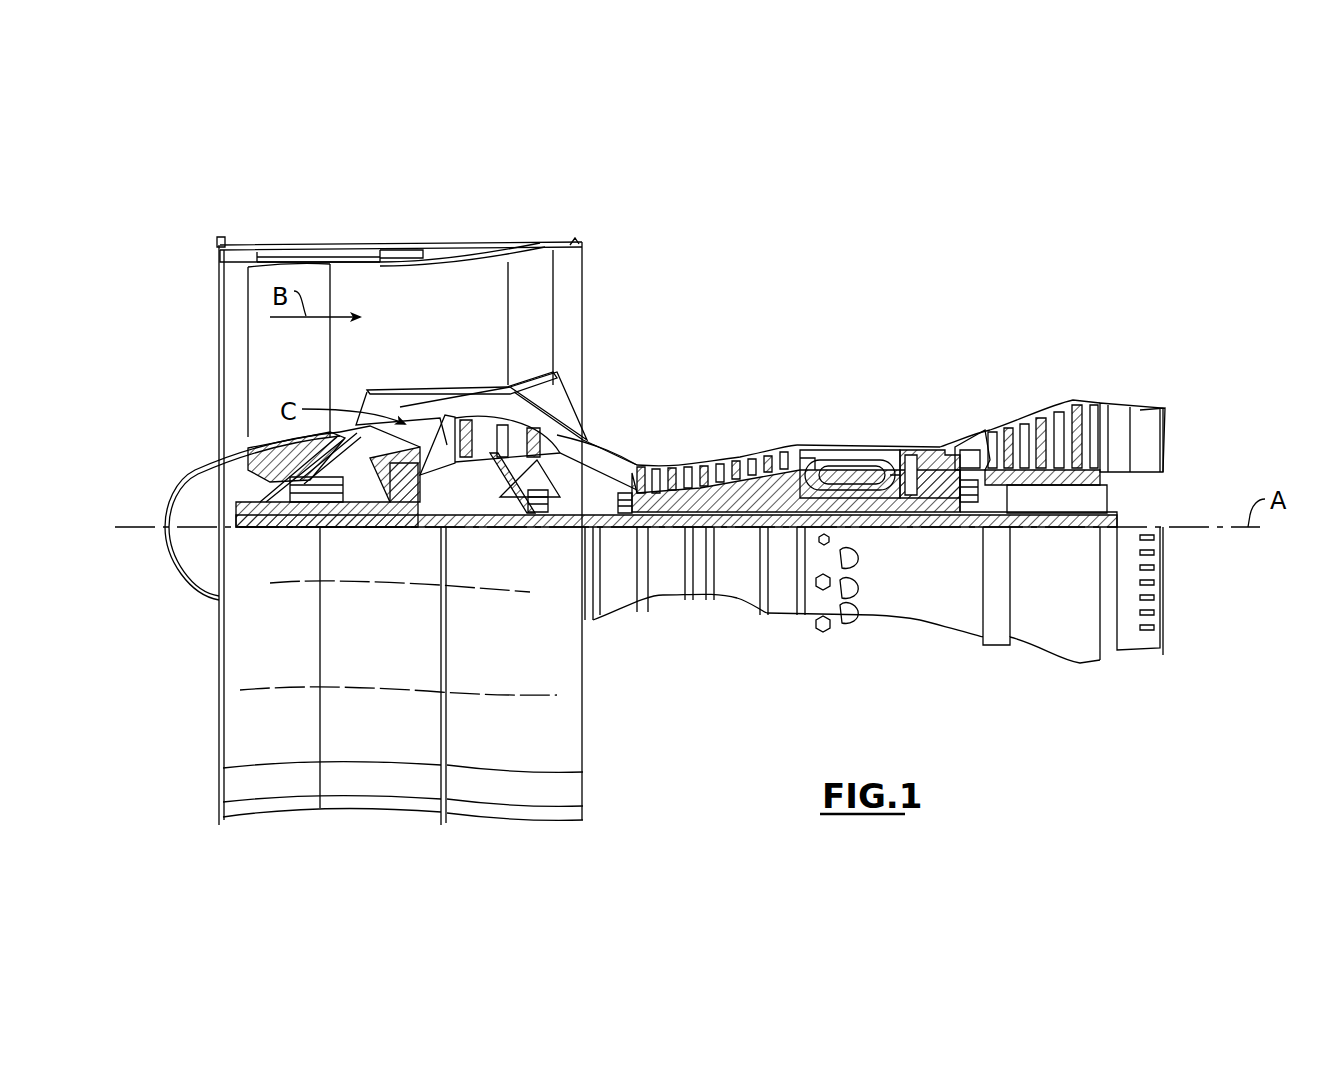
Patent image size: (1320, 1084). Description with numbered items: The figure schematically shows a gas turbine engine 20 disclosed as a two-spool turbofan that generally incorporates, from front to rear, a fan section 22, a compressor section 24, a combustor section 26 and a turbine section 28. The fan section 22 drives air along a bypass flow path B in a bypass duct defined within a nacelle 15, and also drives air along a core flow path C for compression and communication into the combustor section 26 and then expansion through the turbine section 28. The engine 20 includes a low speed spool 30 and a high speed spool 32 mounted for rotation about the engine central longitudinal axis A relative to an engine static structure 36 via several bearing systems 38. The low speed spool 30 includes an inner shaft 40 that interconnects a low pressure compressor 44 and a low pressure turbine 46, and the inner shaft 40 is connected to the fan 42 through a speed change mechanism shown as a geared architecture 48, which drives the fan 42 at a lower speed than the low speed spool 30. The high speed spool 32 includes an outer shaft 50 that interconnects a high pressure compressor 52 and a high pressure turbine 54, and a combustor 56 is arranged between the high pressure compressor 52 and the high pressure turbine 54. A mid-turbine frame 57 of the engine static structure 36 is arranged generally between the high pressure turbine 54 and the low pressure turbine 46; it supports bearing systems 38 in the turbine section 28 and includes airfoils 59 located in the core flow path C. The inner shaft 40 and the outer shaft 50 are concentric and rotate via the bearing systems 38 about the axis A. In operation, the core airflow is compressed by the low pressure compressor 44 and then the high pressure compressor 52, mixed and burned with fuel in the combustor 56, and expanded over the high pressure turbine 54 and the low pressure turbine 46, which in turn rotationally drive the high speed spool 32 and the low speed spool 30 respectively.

The nacelle 15 is at (400, 248).
The gas turbine engine 20 is at (865, 293).
The fan section 22 is at (330, 232).
The compressor section 24 is at (632, 436).
The combustor section 26 is at (852, 424).
The turbine section 28 is at (1003, 385).
The low speed spool 30 is at (742, 535).
The high speed spool 32 is at (788, 472).
The engine static structure 36 is at (780, 606).
The bearing systems 38 is at (545, 512).
The inner shaft 40 is at (606, 600).
The fan 42 is at (308, 372).
The low pressure compressor 44 is at (505, 432).
The low pressure turbine 46 is at (1050, 416).
The geared architecture 48 is at (410, 512).
The outer shaft 50 is at (868, 525).
The high pressure compressor 52 is at (700, 466).
The high pressure turbine 54 is at (930, 456).
The combustor 56 is at (858, 470).
The mid-turbine frame 57 is at (965, 445).
The airfoils 59 is at (985, 490).